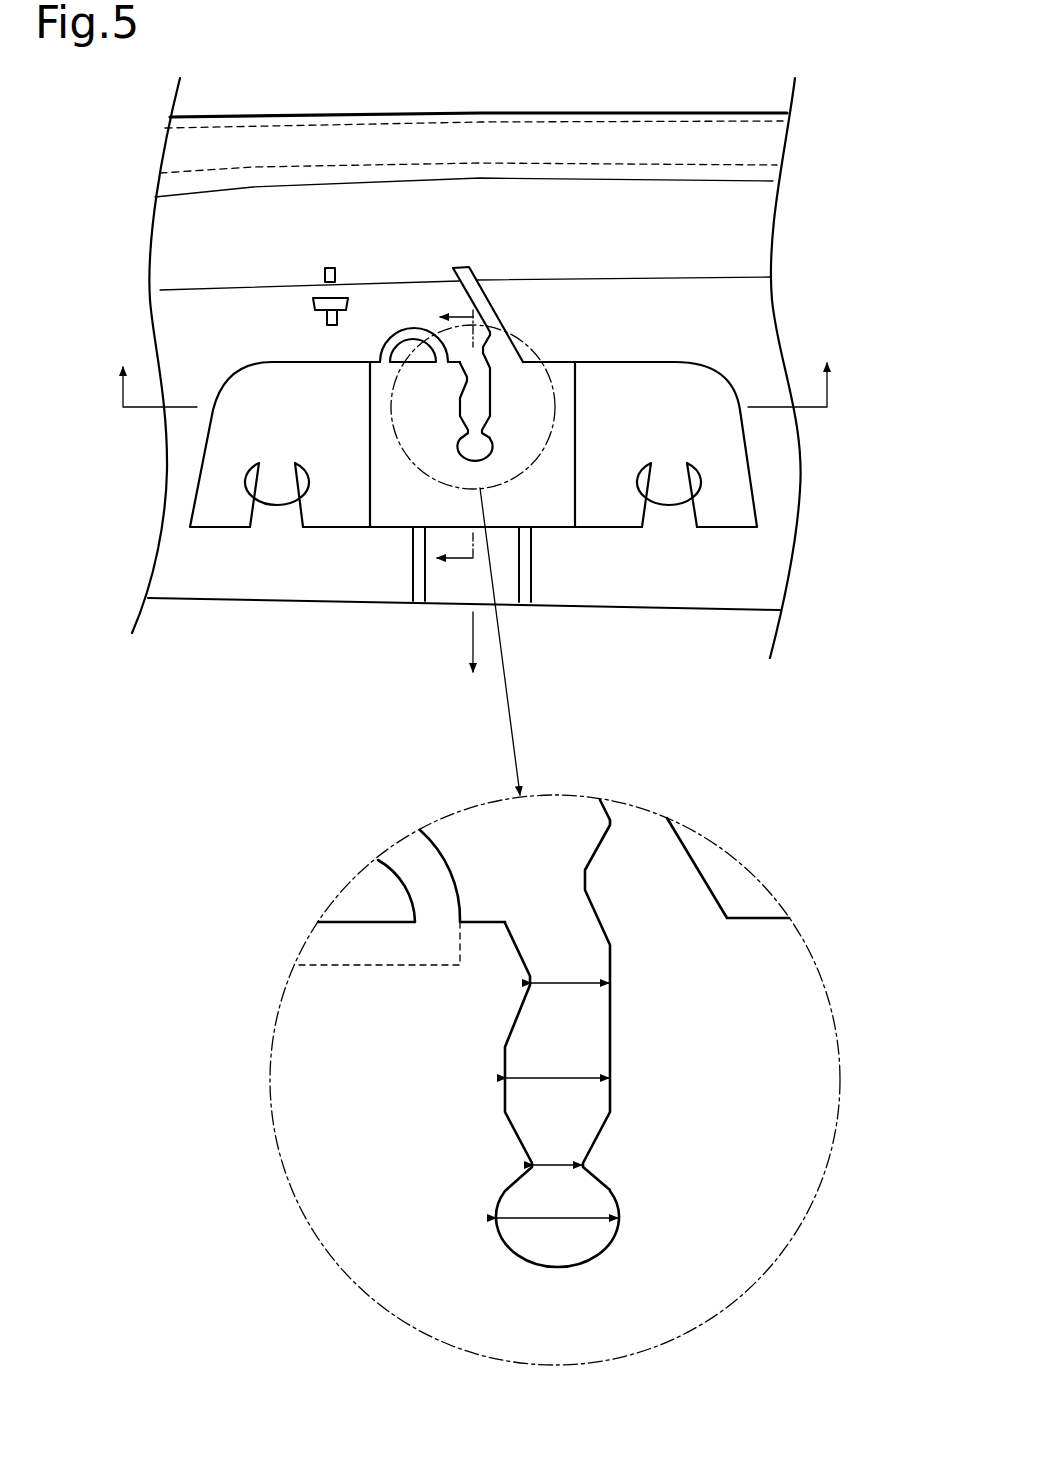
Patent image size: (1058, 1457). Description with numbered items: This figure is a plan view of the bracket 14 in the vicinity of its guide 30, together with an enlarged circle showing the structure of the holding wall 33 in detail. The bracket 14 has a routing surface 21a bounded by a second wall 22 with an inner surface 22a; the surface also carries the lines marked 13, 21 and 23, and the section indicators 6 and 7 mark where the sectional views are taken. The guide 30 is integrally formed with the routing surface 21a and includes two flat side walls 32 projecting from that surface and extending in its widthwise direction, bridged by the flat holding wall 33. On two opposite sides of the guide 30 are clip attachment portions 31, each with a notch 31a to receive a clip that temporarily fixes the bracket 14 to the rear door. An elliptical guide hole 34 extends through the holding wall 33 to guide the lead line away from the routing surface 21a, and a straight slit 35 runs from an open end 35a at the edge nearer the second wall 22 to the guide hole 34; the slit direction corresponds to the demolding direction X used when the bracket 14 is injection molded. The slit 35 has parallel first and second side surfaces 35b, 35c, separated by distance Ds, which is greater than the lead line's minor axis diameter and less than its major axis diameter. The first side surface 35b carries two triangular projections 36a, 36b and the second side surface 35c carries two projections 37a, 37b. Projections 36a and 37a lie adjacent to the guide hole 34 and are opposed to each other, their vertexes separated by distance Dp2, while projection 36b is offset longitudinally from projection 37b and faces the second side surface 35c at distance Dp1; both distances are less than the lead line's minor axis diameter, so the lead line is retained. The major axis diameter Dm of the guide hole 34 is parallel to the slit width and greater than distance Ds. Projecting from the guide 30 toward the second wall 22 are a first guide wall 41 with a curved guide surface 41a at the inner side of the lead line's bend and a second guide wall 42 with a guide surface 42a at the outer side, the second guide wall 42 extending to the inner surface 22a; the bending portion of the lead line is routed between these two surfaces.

The fuel cell stack 13 is at (463, 122).
The bracket 14 is at (667, 110).
The case bottom edge 21 is at (260, 603).
The routing surface 21a is at (180, 323).
The second wall 22 is at (340, 112).
The inner surface of the second wall 22a is at (747, 207).
The case line 23 is at (743, 278).
The guide 30 is at (387, 530).
The clip attachment portion 31 is at (315, 520).
The notch 31a is at (278, 430).
The side wall 32 is at (377, 483).
The holding wall 33 is at (537, 380).
The guide hole 34 is at (460, 447).
The slit 35 is at (482, 380).
The open end 35a is at (505, 920).
The first side surface 35b is at (505, 1095).
The second side surface 35c is at (600, 1020).
The projection 36a is at (510, 1160).
The projection 36b is at (505, 993).
The projection 37a is at (605, 1155).
The projection 37b is at (598, 878).
The first guide wall 41 is at (402, 337).
The curved guide surface 41a is at (410, 330).
The second guide wall 42 is at (495, 300).
The guide surface 42a is at (450, 272).
The section line 6 is at (474, 370).
The section line 7 is at (451, 436).
The demolding direction X is at (468, 640).
The distance between vertex of projection 36b and second side surface Dp1 is at (570, 966).
The distance between first and second side surfaces Ds is at (557, 1061).
The distance between vertexes of projections 36a and 37a Dp2 is at (557, 1147).
The major axis diameter of the guide hole Dm is at (557, 1202).